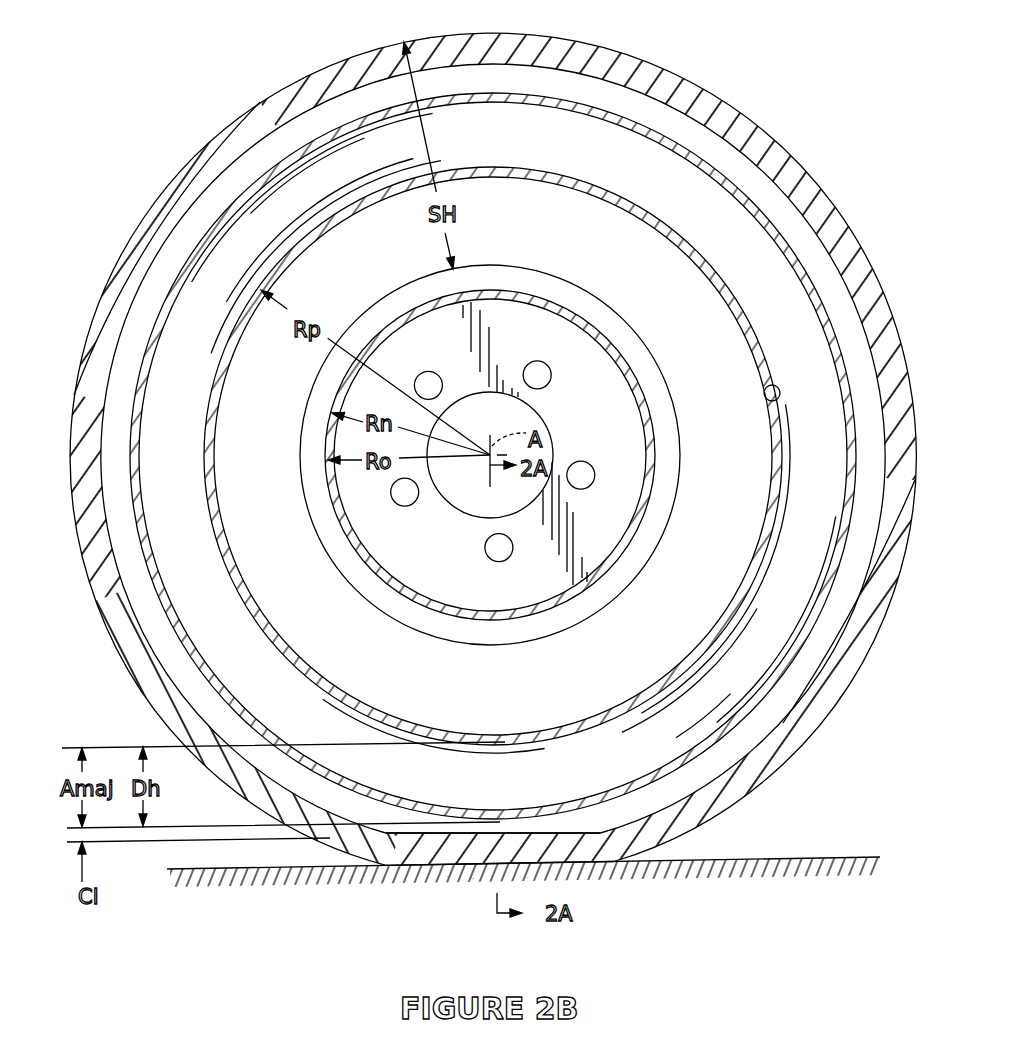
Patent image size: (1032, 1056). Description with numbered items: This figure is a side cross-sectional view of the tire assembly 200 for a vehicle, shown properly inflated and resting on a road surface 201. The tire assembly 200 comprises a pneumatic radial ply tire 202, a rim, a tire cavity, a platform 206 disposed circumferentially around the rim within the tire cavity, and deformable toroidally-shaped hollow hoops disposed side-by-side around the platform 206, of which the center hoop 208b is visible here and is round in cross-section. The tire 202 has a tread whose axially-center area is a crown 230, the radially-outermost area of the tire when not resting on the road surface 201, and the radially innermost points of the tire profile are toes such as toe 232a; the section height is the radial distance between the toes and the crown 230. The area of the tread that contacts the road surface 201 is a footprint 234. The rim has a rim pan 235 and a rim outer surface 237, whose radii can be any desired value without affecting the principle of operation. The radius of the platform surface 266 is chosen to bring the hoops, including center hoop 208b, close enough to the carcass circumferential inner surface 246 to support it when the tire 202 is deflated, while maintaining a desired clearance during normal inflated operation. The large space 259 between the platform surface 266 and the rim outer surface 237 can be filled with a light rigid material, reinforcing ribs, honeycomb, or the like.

The tire assembly 200 is at (493, 467).
The road surface 201 is at (840, 858).
The pneumatic radial ply tire 202 is at (493, 442).
The platform 206 is at (672, 237).
The center hoop 208b is at (662, 128).
The crown 230 is at (540, 36).
The toe 232a is at (735, 302).
The footprint 234 is at (568, 861).
The rim pan 235 is at (764, 390).
The rim outer surface 237 is at (768, 415).
The carcass circumferential inner surface 246 is at (548, 833).
The large space 259 is at (717, 357).
The platform surface 266 is at (603, 297).